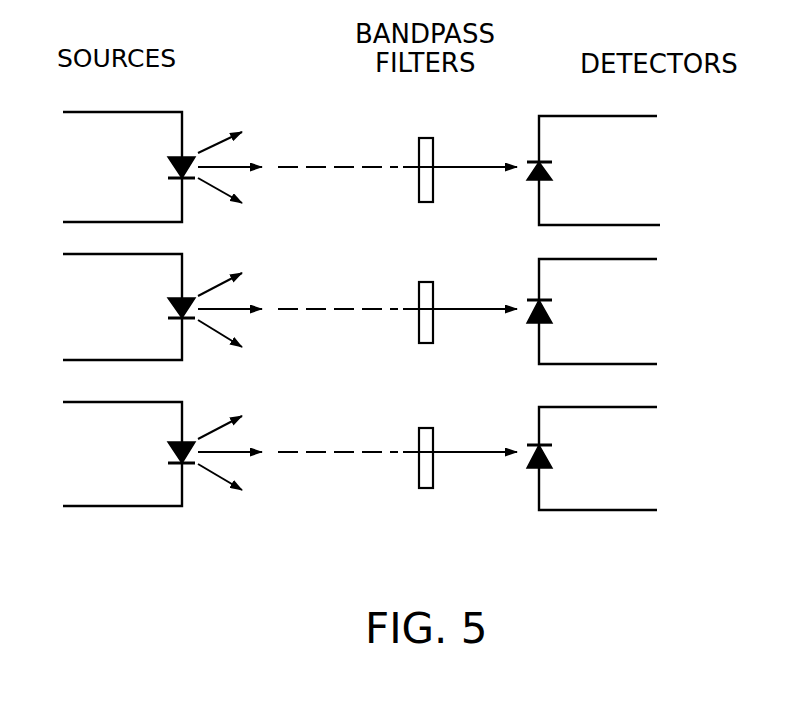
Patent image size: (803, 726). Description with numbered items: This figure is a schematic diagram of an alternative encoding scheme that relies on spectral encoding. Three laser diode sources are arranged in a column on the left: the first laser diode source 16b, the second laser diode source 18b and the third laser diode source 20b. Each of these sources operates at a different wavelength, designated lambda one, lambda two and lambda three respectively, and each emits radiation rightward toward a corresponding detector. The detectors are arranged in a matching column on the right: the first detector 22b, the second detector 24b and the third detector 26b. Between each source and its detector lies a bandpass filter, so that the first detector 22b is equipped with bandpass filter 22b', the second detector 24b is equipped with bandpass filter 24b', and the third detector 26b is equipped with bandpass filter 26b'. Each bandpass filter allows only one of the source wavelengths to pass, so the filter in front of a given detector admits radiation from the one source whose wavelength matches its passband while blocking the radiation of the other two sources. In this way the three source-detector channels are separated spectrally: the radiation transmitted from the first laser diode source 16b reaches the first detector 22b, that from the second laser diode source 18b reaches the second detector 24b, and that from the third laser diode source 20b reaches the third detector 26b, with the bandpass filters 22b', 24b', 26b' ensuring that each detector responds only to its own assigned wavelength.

The laser diode source S1 16b is at (183, 128).
The laser diode source S2 18b is at (183, 277).
The laser diode source S3 20b is at (183, 423).
The bandpass filter 22b' is at (393, 151).
The bandpass filter 24b' is at (394, 294).
The bandpass filter 26b' is at (388, 440).
The detector D1 22b is at (597, 170).
The detector D2 24b is at (597, 311).
The detector D3 26b is at (595, 458).